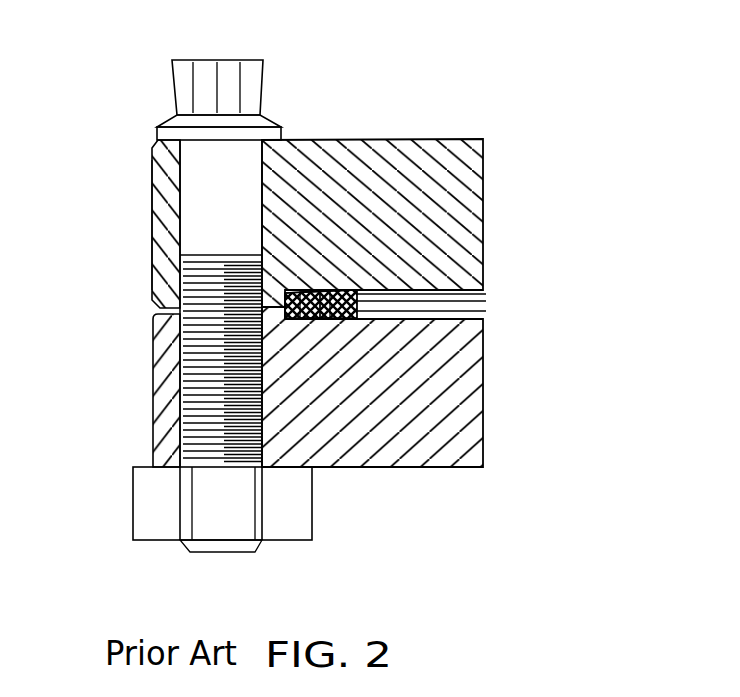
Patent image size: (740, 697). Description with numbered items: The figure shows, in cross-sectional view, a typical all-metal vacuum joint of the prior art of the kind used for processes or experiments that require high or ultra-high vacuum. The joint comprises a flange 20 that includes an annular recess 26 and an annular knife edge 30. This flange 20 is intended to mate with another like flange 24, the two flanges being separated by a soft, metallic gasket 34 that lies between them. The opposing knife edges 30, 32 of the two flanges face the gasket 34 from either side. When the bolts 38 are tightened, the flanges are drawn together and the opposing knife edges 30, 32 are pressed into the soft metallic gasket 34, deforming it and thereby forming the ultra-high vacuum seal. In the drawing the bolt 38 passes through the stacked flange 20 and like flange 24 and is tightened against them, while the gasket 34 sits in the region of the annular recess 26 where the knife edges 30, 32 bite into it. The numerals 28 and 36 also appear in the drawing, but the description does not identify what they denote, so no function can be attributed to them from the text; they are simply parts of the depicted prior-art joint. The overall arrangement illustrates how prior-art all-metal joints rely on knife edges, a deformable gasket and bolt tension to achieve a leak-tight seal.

The flange 20 is at (160, 235).
The like flange 24 is at (165, 380).
The annular recess 26 is at (297, 292).
The seal body 28 is at (300, 320).
The annular knife edge 30 is at (320, 292).
The knife edge 32 is at (323, 320).
The gasket 34 is at (486, 301).
The plate flange 36 is at (153, 190).
The bolts 38 is at (218, 60).